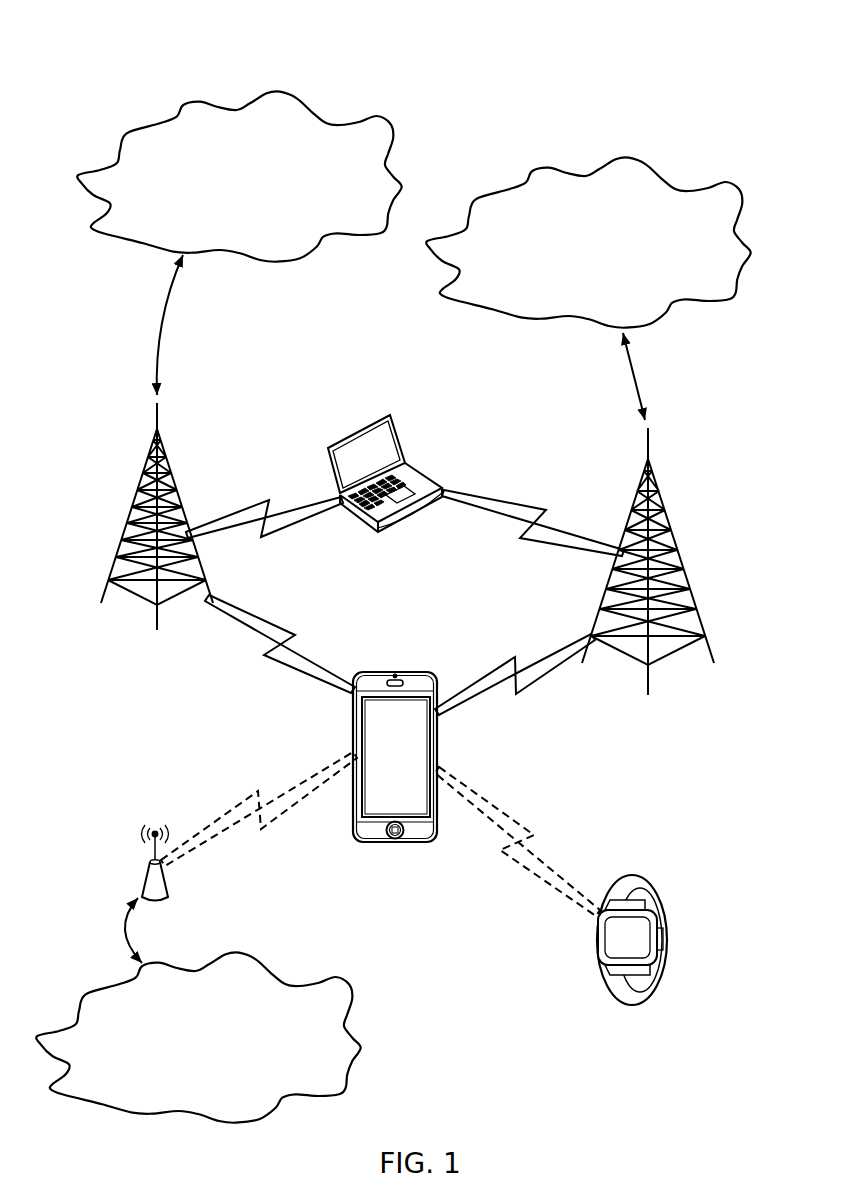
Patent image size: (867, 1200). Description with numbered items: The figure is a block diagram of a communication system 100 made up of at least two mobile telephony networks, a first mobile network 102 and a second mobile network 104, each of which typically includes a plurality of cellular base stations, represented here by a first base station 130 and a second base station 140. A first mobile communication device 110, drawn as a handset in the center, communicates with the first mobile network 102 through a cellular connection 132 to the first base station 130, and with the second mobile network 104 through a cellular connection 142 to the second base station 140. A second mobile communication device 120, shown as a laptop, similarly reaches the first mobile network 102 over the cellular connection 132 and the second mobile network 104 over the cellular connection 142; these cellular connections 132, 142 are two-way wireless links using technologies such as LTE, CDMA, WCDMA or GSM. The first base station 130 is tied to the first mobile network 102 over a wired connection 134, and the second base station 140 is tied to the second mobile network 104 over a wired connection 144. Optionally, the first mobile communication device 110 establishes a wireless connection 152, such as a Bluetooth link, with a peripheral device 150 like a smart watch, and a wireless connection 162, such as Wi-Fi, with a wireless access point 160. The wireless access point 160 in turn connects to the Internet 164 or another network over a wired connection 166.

The communication system 100 is at (158, 59).
The first mobile network 102 is at (239, 191).
The second mobile network 104 is at (588, 225).
The first mobile communication device 110 is at (431, 757).
The second mobile communication device 120 is at (355, 466).
The first base station 130 is at (140, 516).
The cellular connection 132 is at (270, 579).
The wired connection 134 is at (129, 325).
The second base station 140 is at (641, 561).
The cellular connection 142 is at (516, 586).
The wired connection 144 is at (595, 376).
The peripheral device 150 is at (658, 920).
The wireless connection 152 is at (517, 841).
The wireless access point 160 is at (122, 863).
The wireless connection 162 is at (259, 809).
The Internet 164 is at (229, 1037).
The wired connection 166 is at (168, 930).